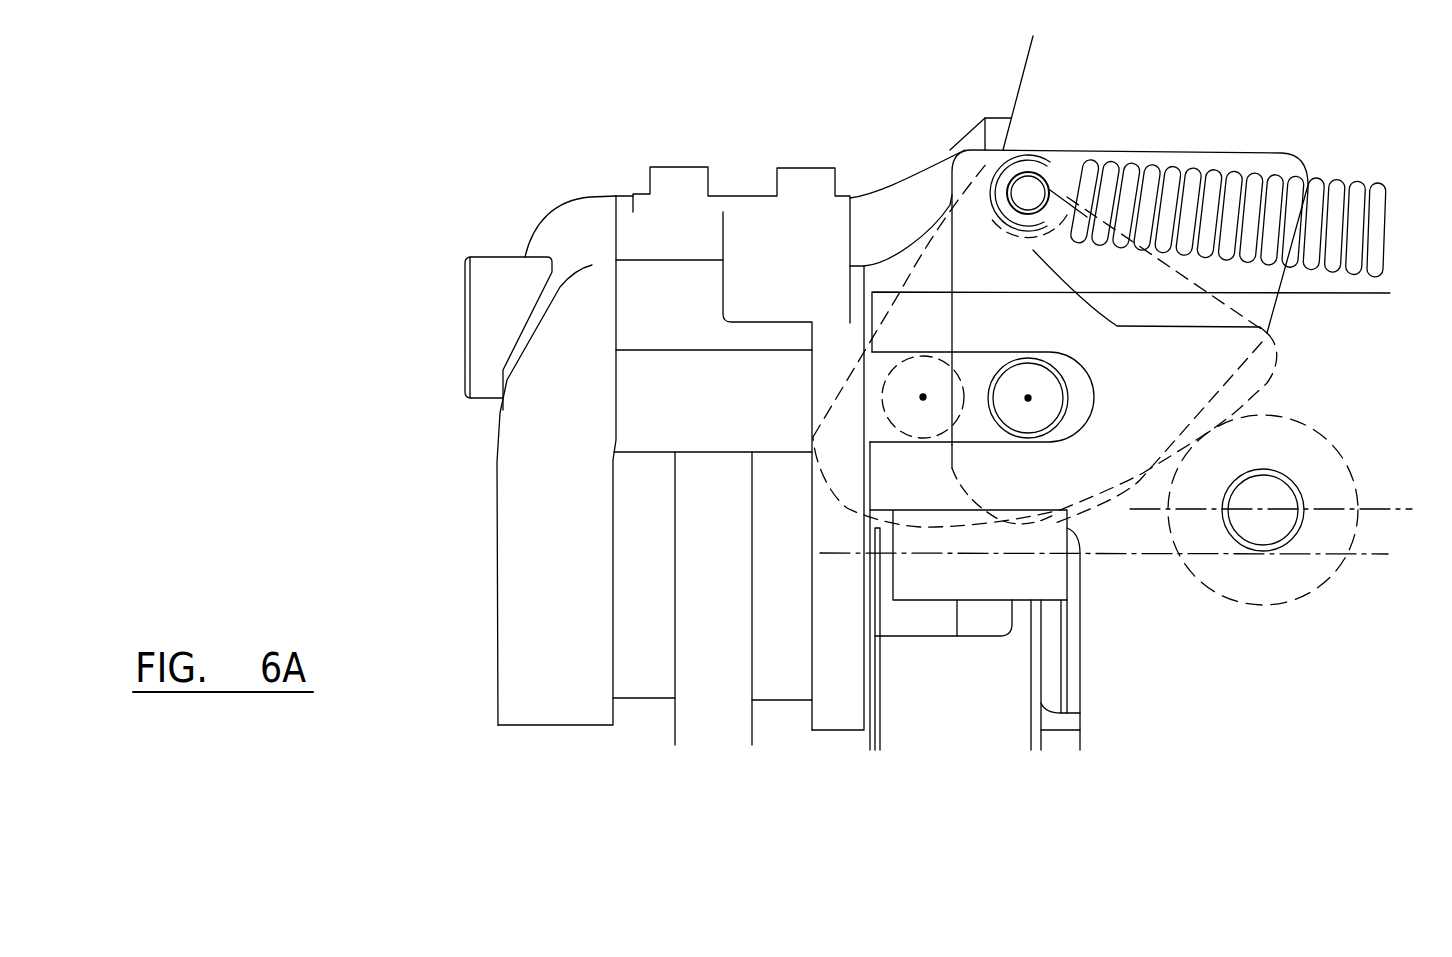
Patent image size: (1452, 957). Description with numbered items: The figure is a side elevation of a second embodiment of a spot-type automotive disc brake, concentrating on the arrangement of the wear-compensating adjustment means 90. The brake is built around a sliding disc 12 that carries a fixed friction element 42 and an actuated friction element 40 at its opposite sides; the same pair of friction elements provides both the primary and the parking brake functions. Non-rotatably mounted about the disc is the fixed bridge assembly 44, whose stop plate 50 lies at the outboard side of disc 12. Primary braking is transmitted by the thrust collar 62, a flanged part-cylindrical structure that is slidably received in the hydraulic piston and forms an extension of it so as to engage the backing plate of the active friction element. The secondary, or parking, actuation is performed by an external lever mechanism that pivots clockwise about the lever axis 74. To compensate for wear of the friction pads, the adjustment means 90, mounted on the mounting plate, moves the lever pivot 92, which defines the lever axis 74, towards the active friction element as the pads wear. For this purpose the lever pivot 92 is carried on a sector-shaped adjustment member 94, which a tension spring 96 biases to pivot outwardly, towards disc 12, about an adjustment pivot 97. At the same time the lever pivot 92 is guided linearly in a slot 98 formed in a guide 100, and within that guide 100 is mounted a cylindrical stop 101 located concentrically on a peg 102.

The sliding disc 12 is at (713, 650).
The actuated friction element 40 is at (780, 653).
The fixed friction element 42 is at (640, 677).
The fixed bridge assembly 44 is at (625, 192).
The stop plate 50 is at (497, 620).
The thrust collar 62 is at (938, 712).
The lever axis 74 is at (1028, 398).
The adjustment means 90 is at (901, 470).
The lever pivot 92 is at (1019, 359).
The adjustment member 94 is at (1205, 290).
The tension spring 96 is at (1152, 165).
The adjustment pivot 97 is at (1267, 333).
The slot 98 is at (987, 442).
The guide 100 is at (922, 483).
The cylindrical stop 101 is at (1327, 577).
The peg 102 is at (1253, 551).